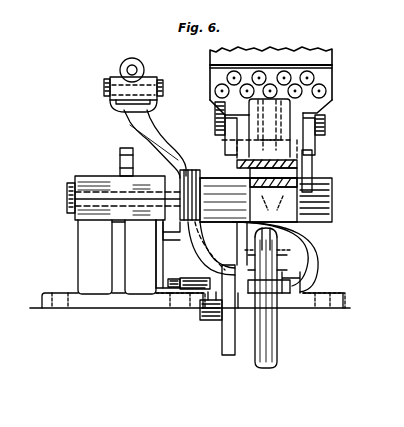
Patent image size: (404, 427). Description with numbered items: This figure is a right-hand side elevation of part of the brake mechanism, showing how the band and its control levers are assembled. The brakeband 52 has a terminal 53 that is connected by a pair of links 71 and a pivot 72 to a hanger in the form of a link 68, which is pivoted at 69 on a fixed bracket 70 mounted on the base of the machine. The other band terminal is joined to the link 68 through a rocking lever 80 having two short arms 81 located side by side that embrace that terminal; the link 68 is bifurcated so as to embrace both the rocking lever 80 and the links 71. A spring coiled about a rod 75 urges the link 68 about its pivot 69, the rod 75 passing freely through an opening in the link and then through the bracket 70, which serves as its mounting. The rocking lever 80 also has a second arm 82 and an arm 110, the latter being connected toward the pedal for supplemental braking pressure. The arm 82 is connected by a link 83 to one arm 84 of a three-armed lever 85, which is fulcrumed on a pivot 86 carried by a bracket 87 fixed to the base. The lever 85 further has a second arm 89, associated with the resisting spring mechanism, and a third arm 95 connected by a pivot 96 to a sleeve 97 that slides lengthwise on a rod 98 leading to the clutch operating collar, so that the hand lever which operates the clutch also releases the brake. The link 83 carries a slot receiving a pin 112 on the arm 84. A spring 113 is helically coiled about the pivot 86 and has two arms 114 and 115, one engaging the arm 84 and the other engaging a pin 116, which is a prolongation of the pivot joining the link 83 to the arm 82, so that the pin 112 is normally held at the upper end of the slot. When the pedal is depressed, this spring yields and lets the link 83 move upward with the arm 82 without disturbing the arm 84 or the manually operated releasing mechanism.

The brakeband 52 is at (333, 58).
The brakeband terminal 53 is at (326, 80).
The arm 110 is at (312, 130).
The links 71 is at (312, 168).
The short arms 81 is at (292, 190).
The pivot 72 is at (335, 206).
The three-armed lever 85 is at (184, 177).
The pivot 86 is at (68, 193).
The second arm 89 is at (124, 150).
The bracket 87 is at (80, 241).
The pivot 96 is at (108, 84).
The sleeve 97 is at (142, 68).
The rod 98 is at (134, 68).
The third arm 95 is at (155, 134).
The spring 113 is at (165, 228).
The spring arm 114 is at (166, 238).
The arm 84 is at (174, 252).
The second arm 82 is at (205, 258).
The spring arm 115 is at (170, 283).
The pin 116 is at (200, 289).
The pin 112 is at (233, 300).
The link 83 is at (222, 318).
The rod 75 is at (277, 342).
The rocking lever 80 is at (280, 233).
The link 68 is at (316, 254).
The pivot 69 is at (300, 275).
The bracket 70 is at (301, 289).